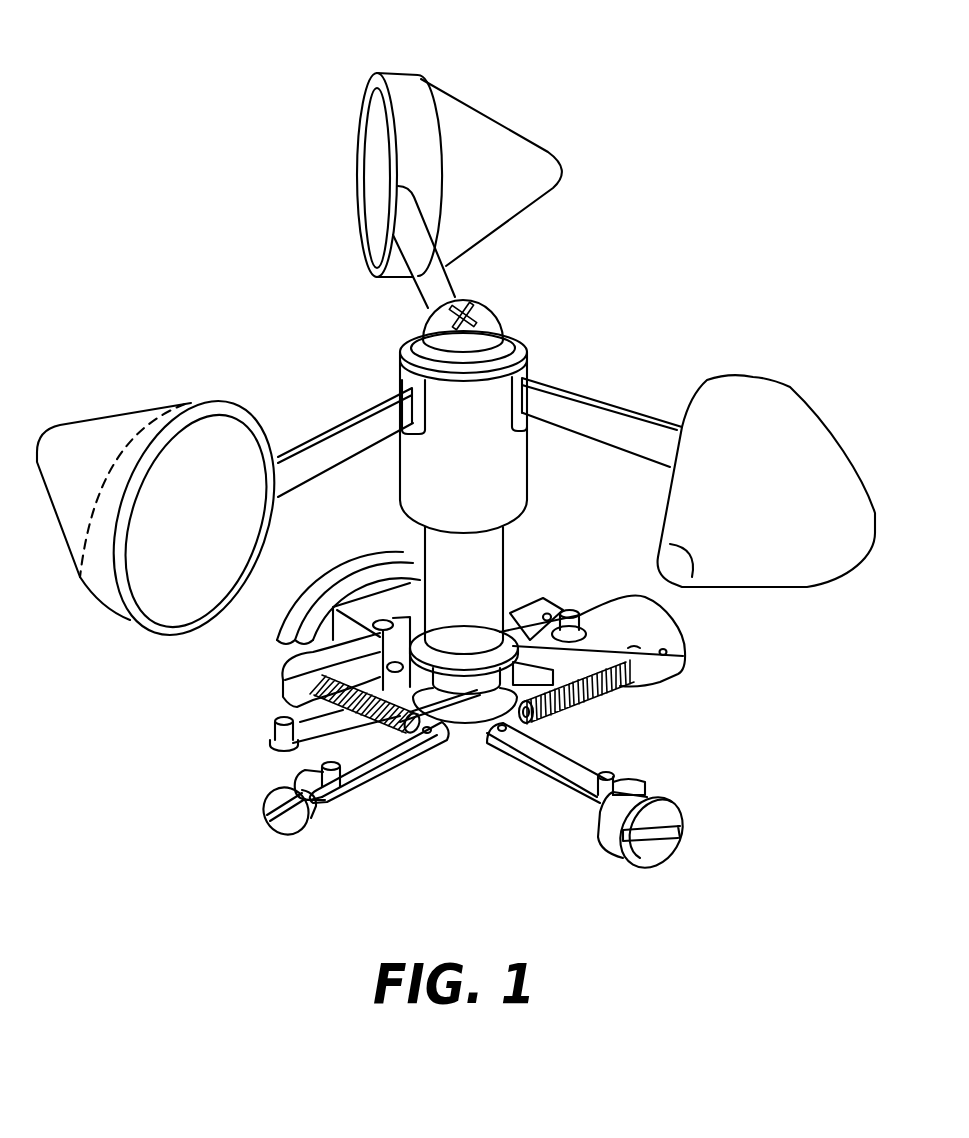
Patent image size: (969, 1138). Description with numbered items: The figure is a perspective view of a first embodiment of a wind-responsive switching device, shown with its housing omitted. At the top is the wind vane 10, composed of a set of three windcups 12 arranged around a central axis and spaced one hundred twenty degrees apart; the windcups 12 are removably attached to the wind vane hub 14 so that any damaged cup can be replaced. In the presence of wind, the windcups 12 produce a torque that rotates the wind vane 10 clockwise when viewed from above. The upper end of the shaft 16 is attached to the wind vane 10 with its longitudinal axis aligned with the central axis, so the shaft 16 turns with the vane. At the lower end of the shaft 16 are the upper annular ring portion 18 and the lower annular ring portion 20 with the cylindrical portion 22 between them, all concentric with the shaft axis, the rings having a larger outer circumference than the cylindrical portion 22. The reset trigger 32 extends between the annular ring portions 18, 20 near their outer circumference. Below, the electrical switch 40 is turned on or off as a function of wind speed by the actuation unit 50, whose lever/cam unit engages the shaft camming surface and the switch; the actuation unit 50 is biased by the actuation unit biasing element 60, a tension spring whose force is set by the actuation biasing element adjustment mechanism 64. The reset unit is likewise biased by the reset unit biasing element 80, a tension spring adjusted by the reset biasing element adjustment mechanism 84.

The wind vane 10 is at (588, 388).
The windcups 12 is at (447, 88).
The wind vane hub 14 is at (408, 440).
The shaft 16 is at (488, 545).
The upper annular ring portion 18 is at (545, 597).
The lower annular ring portion 20 is at (472, 690).
The cylindrical portion 22 is at (482, 683).
The reset trigger 32 is at (587, 703).
The electrical switch 40 is at (400, 573).
The actuation unit 50 is at (685, 640).
The actuation unit biasing element 60 is at (557, 703).
The actuation biasing element adjustment mechanism 64 is at (607, 837).
The reset unit biasing element 80 is at (343, 712).
The reset biasing element adjustment mechanism 84 is at (313, 810).